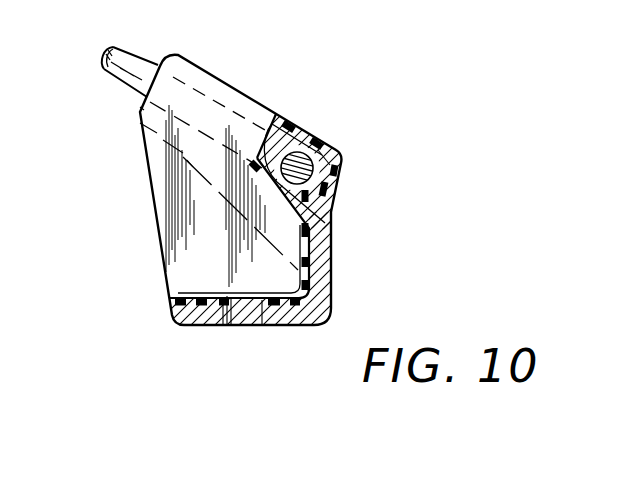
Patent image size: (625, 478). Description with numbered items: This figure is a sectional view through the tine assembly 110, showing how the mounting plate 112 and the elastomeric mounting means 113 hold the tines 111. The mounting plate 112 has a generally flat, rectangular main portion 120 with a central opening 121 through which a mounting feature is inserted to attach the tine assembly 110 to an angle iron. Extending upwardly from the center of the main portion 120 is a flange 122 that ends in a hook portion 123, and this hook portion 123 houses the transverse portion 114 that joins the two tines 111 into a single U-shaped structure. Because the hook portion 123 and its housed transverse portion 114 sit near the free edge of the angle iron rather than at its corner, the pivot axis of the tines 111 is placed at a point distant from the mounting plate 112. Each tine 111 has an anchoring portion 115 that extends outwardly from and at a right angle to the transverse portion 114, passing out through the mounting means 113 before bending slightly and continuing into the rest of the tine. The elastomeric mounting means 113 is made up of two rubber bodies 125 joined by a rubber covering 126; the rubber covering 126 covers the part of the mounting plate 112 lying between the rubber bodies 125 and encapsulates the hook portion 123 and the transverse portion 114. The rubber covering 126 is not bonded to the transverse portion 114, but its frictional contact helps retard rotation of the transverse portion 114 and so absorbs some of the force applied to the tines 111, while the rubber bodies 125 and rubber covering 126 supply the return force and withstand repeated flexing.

The tine assembly 110 is at (258, 186).
The tine 111 is at (143, 64).
The mounting plate 112 is at (328, 268).
The elastomeric mounting means 113 is at (275, 116).
The transverse portion 114 is at (306, 170).
The anchoring portion 115 is at (200, 93).
The main portion 120 is at (206, 310).
The central opening 121 is at (248, 324).
The flange 122 is at (322, 238).
The hook portion 123 is at (320, 152).
The rubber body 125 is at (180, 217).
The rubber covering 126 is at (324, 188).